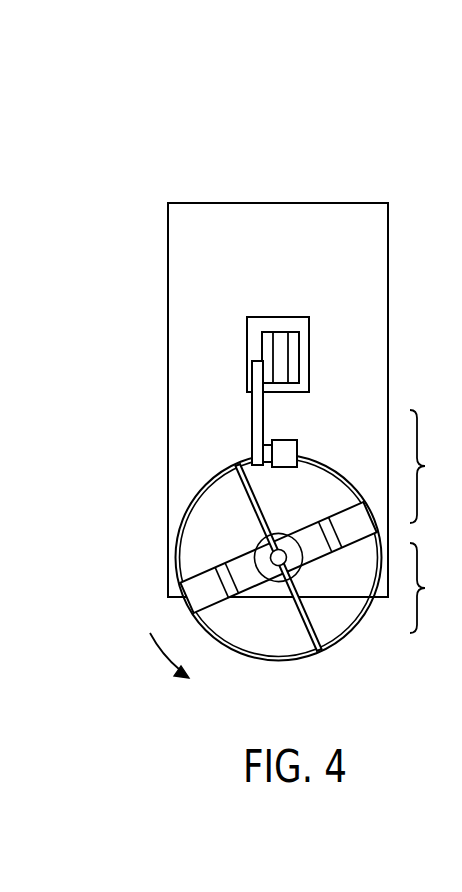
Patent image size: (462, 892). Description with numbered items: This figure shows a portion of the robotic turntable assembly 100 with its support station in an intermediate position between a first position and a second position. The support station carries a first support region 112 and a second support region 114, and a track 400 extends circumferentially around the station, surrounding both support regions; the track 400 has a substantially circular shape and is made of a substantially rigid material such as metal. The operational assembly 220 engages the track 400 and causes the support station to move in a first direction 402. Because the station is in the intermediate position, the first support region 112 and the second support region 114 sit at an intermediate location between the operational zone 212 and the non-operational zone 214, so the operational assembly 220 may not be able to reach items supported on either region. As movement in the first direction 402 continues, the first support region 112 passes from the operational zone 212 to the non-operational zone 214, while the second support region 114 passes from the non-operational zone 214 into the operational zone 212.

The robotic turntable assembly 100 is at (229, 151).
The first support region 112 is at (191, 596).
The second support region 114 is at (357, 511).
The operational zone 212 is at (435, 466).
The non-operational zone 214 is at (435, 588).
The operational assembly 220 is at (268, 356).
The track 400 is at (351, 633).
The first direction 402 is at (166, 661).